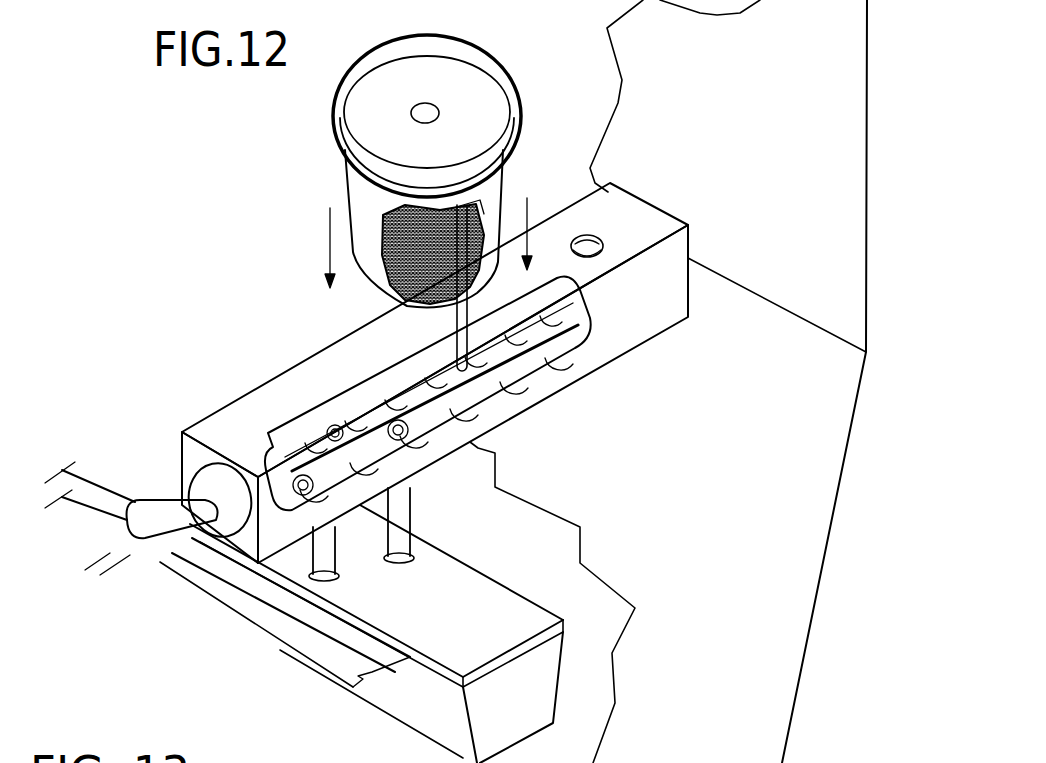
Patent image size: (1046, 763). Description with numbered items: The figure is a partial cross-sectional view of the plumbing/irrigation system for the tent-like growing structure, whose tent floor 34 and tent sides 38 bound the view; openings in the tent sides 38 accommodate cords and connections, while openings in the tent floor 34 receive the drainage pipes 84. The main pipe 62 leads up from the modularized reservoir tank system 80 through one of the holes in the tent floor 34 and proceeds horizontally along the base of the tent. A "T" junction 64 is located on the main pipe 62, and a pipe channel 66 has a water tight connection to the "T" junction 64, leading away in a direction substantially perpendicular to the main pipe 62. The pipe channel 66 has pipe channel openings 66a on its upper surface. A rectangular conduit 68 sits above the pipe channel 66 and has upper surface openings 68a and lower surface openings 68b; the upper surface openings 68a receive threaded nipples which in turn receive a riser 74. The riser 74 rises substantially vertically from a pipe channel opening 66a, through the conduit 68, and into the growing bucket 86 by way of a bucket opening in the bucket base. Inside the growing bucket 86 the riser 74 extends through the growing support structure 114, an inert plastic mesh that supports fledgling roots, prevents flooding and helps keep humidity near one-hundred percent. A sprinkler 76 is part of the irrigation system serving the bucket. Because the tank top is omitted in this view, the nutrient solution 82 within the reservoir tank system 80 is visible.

The tent floor 34 is at (802, 668).
The tent sides 38 is at (627, 27).
The main pipe 62 is at (97, 503).
The "T" junction 64 is at (167, 548).
The pipe channel 66 is at (292, 450).
The pipe channel opening 66a is at (327, 423).
The rectangular conduit 68 is at (633, 330).
The upper surface opening 68a is at (597, 235).
The lower surface opening 68b is at (420, 413).
The riser 74 is at (472, 300).
The sprinkler 76 is at (477, 215).
The modularized reservoir tank system 80 is at (540, 693).
The nutrient solution 82 is at (493, 615).
The drainage pipe 84 is at (405, 503).
The growing bucket 86 is at (336, 177).
The growing support structure 114 is at (392, 302).